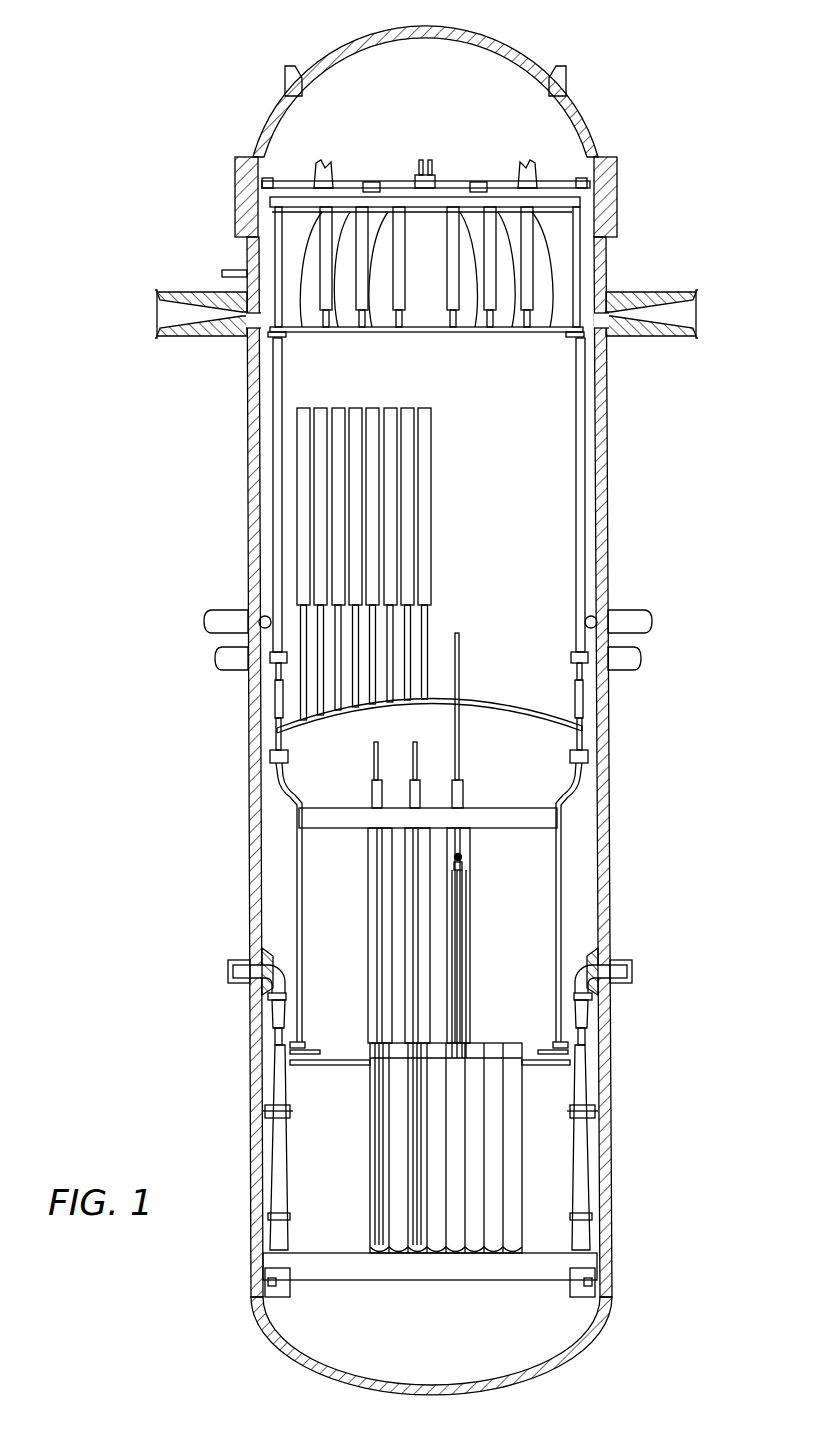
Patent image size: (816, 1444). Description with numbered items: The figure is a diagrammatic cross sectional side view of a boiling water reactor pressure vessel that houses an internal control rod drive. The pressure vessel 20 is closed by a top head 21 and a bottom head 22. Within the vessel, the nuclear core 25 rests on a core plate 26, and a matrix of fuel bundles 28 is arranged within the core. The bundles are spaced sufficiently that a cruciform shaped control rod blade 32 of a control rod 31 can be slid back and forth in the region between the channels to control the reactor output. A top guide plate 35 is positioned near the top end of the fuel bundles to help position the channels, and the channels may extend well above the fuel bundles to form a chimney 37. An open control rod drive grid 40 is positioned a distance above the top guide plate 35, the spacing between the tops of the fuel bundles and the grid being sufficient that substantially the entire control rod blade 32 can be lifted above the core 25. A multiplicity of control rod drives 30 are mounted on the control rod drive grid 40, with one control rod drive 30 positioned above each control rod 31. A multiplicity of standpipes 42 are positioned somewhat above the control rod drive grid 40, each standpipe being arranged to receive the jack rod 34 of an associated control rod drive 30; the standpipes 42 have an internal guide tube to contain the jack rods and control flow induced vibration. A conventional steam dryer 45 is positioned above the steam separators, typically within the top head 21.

The pressure vessel 20 is at (612, 921).
The top head 21 is at (522, 53).
The bottom head 22 is at (597, 1340).
The nuclear core 25 is at (568, 1188).
The core plate 26 is at (558, 1267).
The fuel bundles 28 is at (490, 1102).
The control rod drive 30 is at (463, 795).
The control rod 31 is at (462, 857).
The control rod blade 32 is at (468, 992).
The jack rod 34 is at (458, 653).
The top guide plate 35 is at (600, 1043).
The chimney 37 is at (367, 933).
The control rod drive grid 40 is at (550, 817).
The standpipes 42 is at (322, 625).
The steam dryer 45 is at (558, 263).